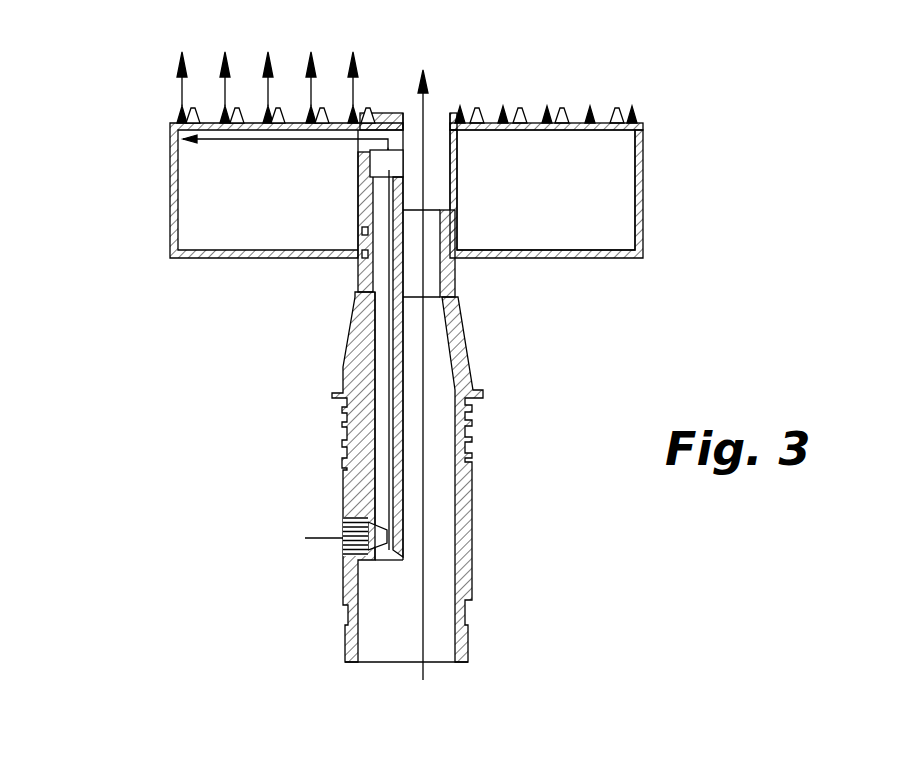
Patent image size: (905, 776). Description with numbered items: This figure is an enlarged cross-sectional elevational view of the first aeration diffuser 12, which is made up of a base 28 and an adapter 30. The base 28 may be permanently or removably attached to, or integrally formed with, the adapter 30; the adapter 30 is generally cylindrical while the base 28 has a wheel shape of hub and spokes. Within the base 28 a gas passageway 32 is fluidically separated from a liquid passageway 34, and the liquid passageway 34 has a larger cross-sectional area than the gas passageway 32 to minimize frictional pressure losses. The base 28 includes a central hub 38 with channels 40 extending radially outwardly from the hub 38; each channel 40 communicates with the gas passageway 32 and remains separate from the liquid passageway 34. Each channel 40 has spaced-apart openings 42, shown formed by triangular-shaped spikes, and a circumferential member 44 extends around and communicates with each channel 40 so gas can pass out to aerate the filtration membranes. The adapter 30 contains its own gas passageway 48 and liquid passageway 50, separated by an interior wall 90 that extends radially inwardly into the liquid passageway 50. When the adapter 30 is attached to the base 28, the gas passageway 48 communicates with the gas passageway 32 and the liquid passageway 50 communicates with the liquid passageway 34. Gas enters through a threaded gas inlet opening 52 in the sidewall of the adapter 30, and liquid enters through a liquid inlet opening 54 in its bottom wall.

The first aeration diffuser 12 is at (127, 122).
The base 28 is at (170, 202).
The adapter 30 is at (472, 487).
The gas passageway 32 is at (378, 200).
The liquid passageway 34 is at (432, 142).
The central hub 38 is at (457, 162).
The channel 40 is at (570, 123).
The opening 42 is at (267, 108).
The circumferential member 44 is at (640, 193).
The gas passageway 48 is at (382, 490).
The liquid passageway 50 is at (443, 559).
The gas inlet opening 52 is at (343, 553).
The liquid inlet opening 54 is at (460, 662).
The interior wall 90 is at (402, 407).